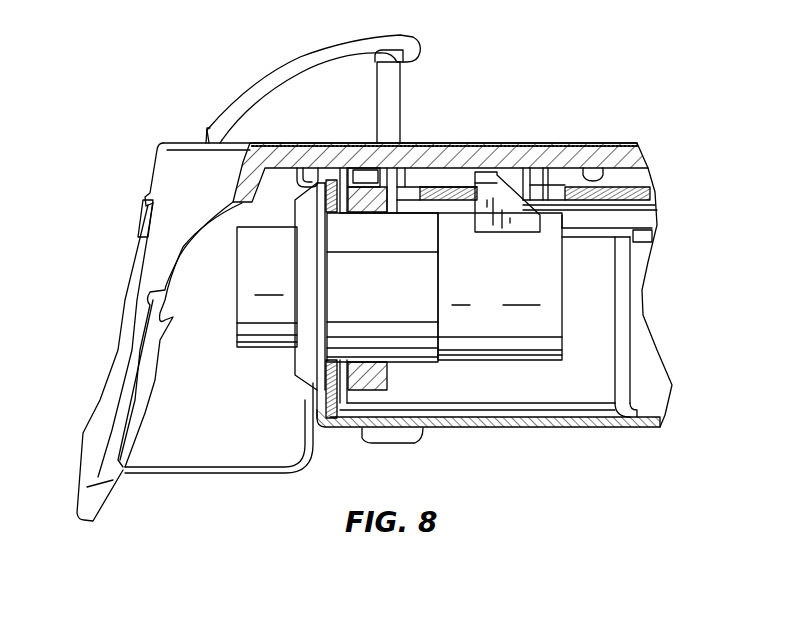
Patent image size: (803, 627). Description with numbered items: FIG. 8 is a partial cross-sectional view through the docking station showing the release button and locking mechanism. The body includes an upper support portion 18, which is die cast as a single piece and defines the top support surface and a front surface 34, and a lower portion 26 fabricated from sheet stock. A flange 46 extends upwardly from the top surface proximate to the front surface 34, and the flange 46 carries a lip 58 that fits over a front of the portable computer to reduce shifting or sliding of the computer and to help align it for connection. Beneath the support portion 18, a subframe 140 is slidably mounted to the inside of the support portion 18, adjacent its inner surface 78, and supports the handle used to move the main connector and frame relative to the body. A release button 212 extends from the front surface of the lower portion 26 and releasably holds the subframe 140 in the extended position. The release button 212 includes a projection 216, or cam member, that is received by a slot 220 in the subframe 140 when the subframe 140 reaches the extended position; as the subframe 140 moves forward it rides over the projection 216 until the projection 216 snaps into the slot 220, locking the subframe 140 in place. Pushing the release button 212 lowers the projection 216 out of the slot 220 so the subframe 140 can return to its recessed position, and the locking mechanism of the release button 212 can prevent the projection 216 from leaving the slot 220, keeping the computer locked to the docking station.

The upper support portion 18 is at (627, 140).
The lower portion 26 is at (600, 427).
The front surface 34 is at (115, 387).
The flange 46 is at (270, 77).
The lip 58 is at (430, 47).
The inner surface 78 is at (603, 177).
The subframe 140 is at (653, 192).
The release button 212 is at (235, 318).
The projection 216 is at (485, 178).
The slot 220 is at (563, 192).